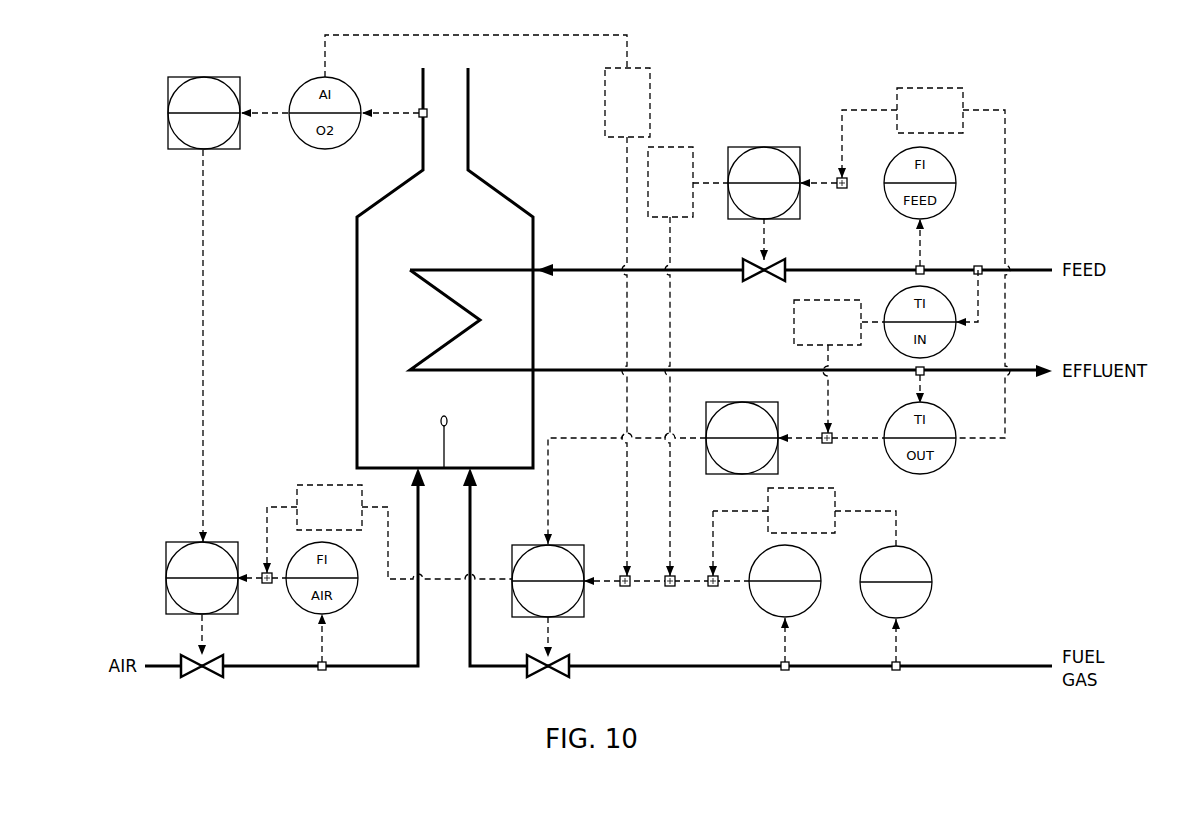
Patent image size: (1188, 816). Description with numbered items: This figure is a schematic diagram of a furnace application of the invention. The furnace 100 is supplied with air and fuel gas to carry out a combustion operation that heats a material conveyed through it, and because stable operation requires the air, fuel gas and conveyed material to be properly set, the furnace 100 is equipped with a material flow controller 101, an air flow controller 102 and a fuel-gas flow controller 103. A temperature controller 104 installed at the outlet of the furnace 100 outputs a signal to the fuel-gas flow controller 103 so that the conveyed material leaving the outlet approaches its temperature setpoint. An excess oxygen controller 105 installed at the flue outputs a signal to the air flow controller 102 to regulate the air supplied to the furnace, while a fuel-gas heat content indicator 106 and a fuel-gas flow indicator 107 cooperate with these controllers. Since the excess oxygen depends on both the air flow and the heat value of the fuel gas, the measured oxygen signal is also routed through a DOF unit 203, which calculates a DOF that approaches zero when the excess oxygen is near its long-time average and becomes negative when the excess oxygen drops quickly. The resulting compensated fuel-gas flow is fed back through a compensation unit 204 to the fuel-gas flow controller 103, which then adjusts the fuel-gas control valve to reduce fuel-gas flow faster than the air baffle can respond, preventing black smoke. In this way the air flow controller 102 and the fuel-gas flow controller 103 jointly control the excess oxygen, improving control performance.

The furnace 100 is at (357, 267).
The material flow controller 101 is at (763, 146).
The air flow controller 102 is at (177, 542).
The fuel-gas flow controller 103 is at (584, 613).
The temperature controller 104 is at (740, 402).
The excess oxygen controller 105 is at (203, 77).
The fuel-gas heat content indicator 106 is at (918, 613).
The fuel-gas flow indicator 107 is at (797, 617).
The DOF unit 203 is at (672, 147).
The compensation unit 204 is at (844, 190).